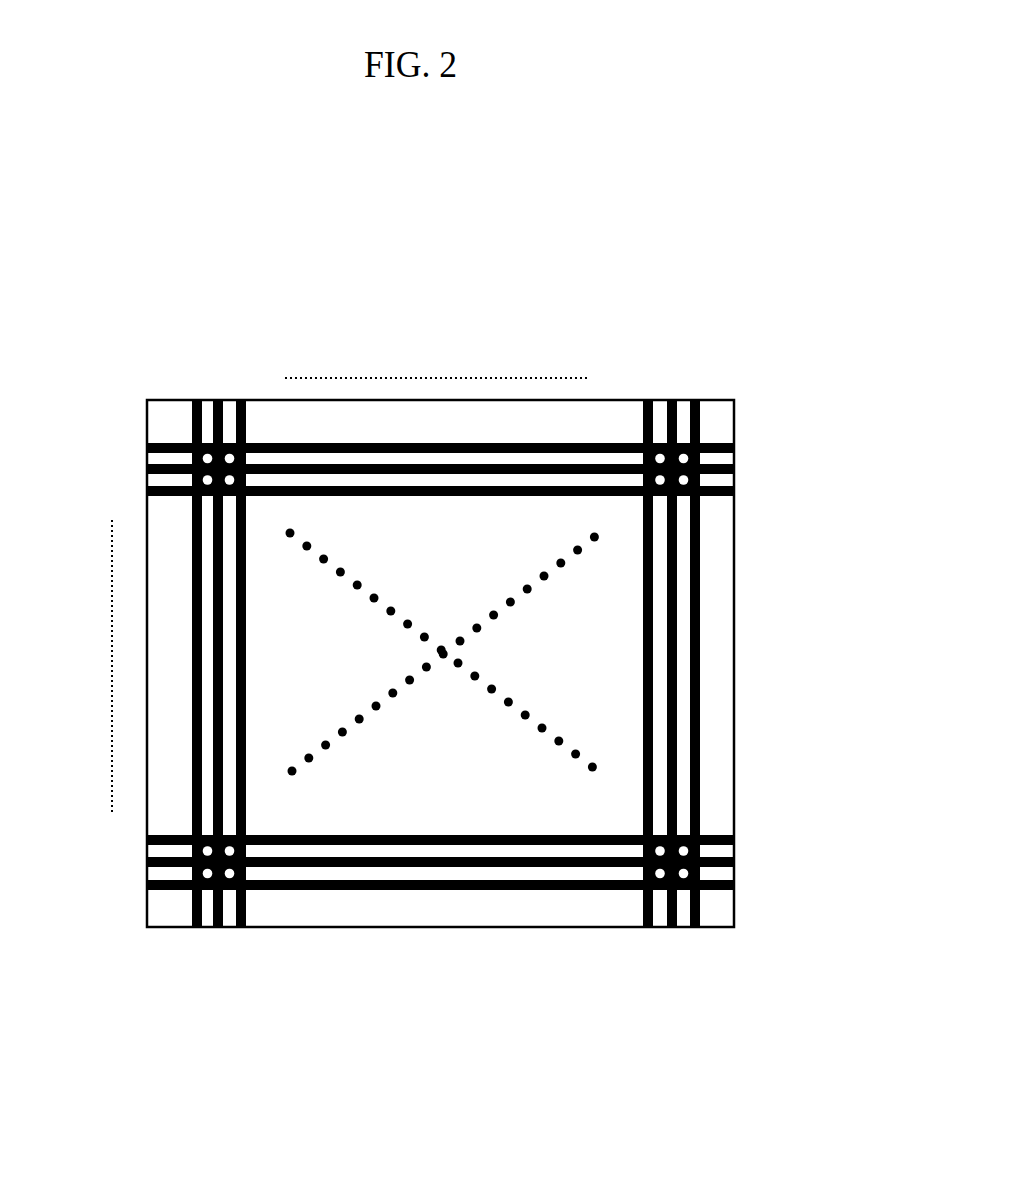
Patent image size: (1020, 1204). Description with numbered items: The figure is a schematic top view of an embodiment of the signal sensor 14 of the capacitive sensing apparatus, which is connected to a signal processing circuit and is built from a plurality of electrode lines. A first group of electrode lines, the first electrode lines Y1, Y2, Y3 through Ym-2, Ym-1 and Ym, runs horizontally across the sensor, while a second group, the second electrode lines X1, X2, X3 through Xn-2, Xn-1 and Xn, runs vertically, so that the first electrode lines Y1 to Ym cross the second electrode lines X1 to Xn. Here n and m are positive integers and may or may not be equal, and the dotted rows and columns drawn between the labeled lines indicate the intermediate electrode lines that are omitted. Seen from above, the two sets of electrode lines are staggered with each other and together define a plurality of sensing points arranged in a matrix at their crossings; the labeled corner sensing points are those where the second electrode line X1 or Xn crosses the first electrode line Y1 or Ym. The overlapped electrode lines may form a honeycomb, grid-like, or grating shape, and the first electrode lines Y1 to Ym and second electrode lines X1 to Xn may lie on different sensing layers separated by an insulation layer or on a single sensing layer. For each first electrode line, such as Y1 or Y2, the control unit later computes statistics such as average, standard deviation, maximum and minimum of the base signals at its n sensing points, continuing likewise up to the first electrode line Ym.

The signal sensor 14 is at (734, 198).
The second electrode line X1 is at (185, 641).
The second electrode line X2 is at (222, 641).
The second electrode line X3 is at (253, 641).
The second electrode line Xn-2 is at (623, 631).
The second electrode line Xn-1 is at (657, 631).
The second electrode line Xn is at (696, 637).
The first electrode line Y1 is at (418, 895).
The first electrode line Y2 is at (418, 868).
The first electrode line Y3 is at (418, 838).
The first electrode line Ym-2 is at (398, 495).
The first electrode line Ym-1 is at (398, 470).
The first electrode line Ym is at (413, 438).